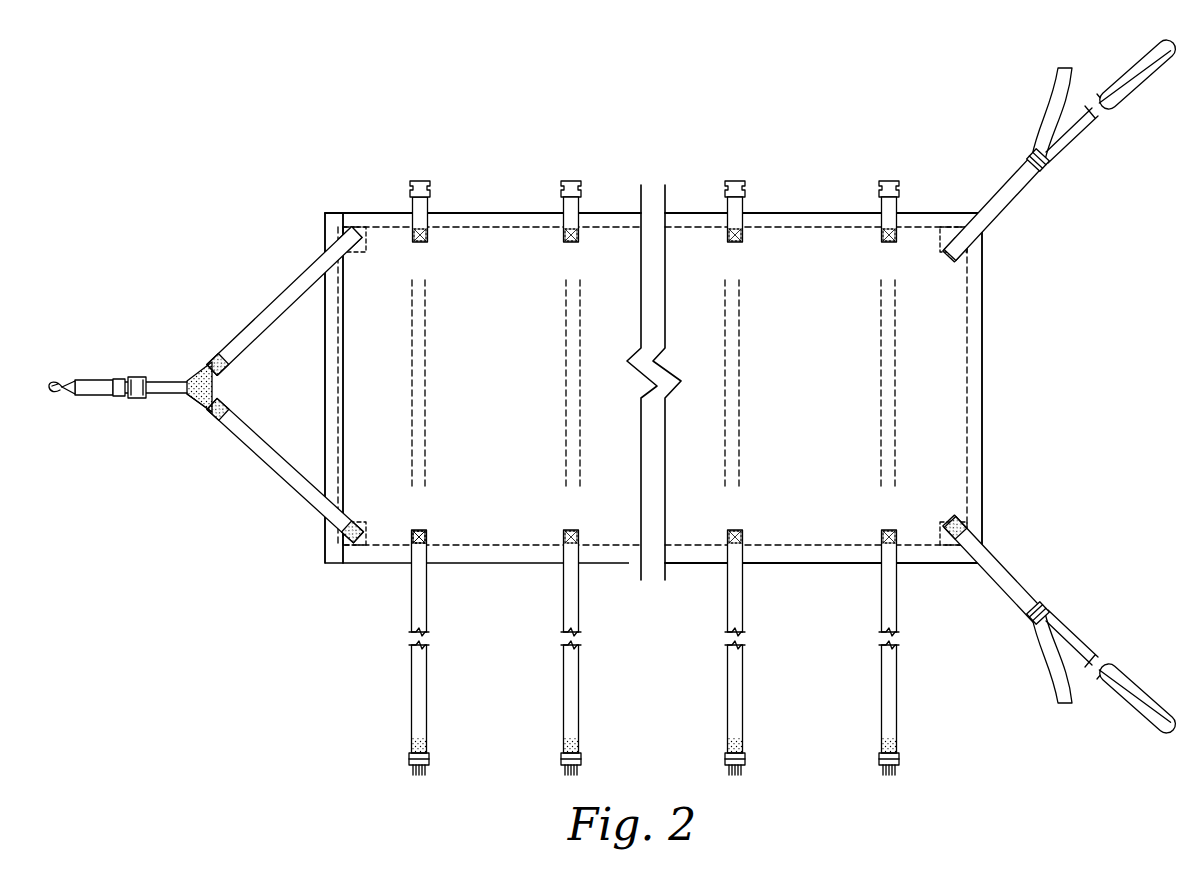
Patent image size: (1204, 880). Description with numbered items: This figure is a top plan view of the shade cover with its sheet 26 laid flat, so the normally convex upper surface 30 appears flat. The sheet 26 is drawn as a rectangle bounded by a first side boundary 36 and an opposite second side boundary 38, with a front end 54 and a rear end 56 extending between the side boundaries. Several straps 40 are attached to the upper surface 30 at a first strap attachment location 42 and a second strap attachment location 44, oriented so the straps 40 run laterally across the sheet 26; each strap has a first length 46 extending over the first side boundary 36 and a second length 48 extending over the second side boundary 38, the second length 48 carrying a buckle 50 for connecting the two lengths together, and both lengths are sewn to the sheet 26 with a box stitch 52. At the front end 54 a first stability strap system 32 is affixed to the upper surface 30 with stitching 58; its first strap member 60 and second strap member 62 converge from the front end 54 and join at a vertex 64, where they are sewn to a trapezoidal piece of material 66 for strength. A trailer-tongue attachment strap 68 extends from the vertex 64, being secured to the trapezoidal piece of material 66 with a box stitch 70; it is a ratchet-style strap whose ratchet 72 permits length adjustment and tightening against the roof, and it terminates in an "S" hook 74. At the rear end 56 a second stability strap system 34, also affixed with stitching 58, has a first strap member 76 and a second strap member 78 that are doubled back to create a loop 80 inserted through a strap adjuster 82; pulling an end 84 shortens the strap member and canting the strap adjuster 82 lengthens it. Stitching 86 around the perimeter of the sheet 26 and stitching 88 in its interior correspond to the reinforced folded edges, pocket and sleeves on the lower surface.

The sheet 26 is at (474, 226).
The upper surface 30 is at (478, 398).
The first stability strap system 32 is at (206, 385).
The second stability strap system 34 is at (1061, 405).
The first side boundary 36 is at (698, 566).
The second side boundary 38 is at (593, 213).
The straps 40 is at (597, 637).
The first strap attachment location 42 is at (424, 530).
The second strap attachment location 44 is at (418, 238).
The first length 46 is at (439, 637).
The second length 48 is at (416, 214).
The buckle 50 is at (415, 181).
The box stitch 52 is at (568, 240).
The front end 54 is at (333, 362).
The rear end 56 is at (978, 358).
The stitching 58 is at (349, 229).
The first strap member 60 is at (267, 452).
The second strap member 62 is at (278, 309).
The vertex 64 is at (172, 370).
The trapezoidal piece of material 66 is at (200, 377).
The trailer-tongue attachment strap 68 is at (99, 380).
The box stitch 70 is at (186, 399).
The ratchet 72 is at (120, 379).
The "S" hook 74 is at (55, 395).
The first strap member 76 is at (1006, 588).
The second strap member 78 is at (994, 197).
The loop 80 is at (1148, 95).
The strap adjuster 82 is at (1048, 166).
The end 84 is at (1048, 66).
The stitching 86 is at (836, 228).
The stitching 88 is at (740, 372).